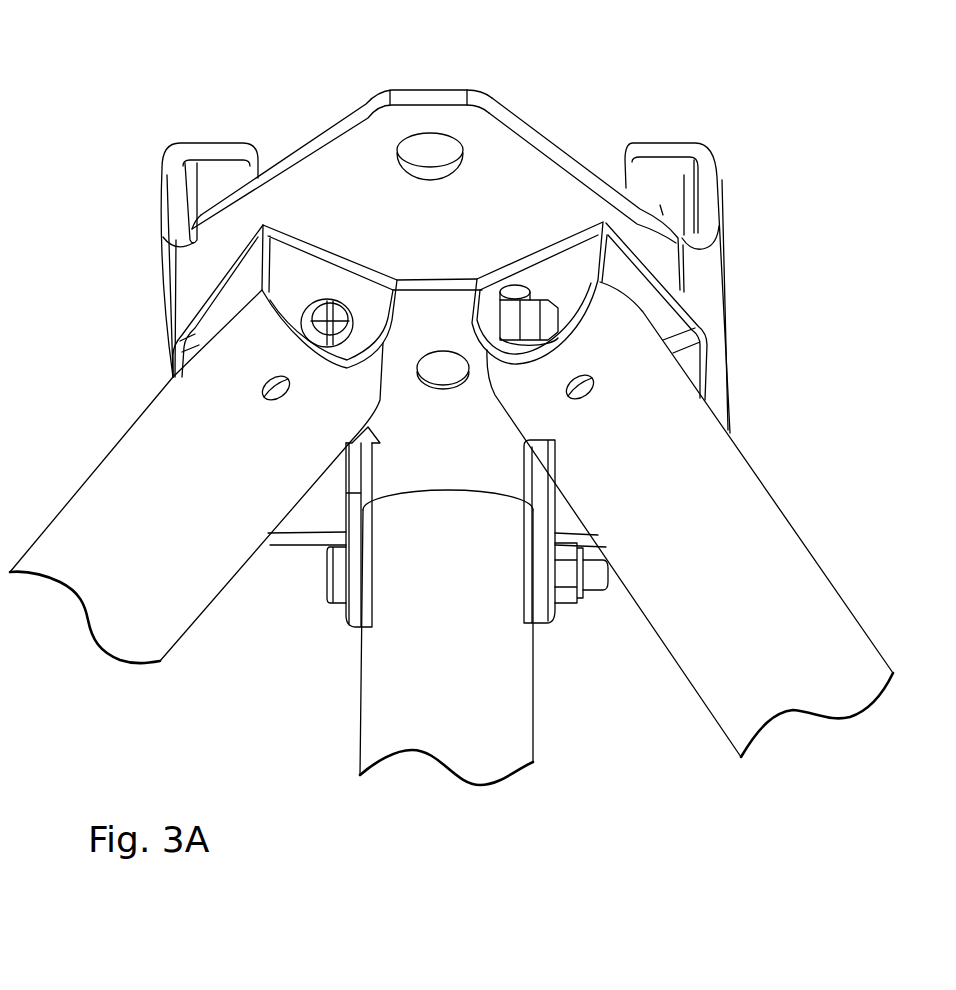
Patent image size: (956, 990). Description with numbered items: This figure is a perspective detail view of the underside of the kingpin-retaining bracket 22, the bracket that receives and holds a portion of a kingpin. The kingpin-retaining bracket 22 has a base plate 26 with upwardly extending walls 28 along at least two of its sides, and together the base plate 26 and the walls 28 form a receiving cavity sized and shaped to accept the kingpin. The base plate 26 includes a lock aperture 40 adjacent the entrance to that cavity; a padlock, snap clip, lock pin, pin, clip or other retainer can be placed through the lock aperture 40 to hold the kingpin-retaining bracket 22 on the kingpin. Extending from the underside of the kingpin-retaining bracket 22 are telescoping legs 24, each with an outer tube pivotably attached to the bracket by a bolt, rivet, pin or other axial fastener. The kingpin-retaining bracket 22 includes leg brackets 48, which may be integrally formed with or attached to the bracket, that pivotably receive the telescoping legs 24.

The kingpin-retaining bracket 22 is at (329, 130).
The telescoping legs 24 is at (757, 543).
The base plate 26 is at (528, 165).
The upwardly extending walls 28 is at (173, 198).
The lock aperture 40 is at (450, 137).
The leg bracket 48 is at (280, 268).